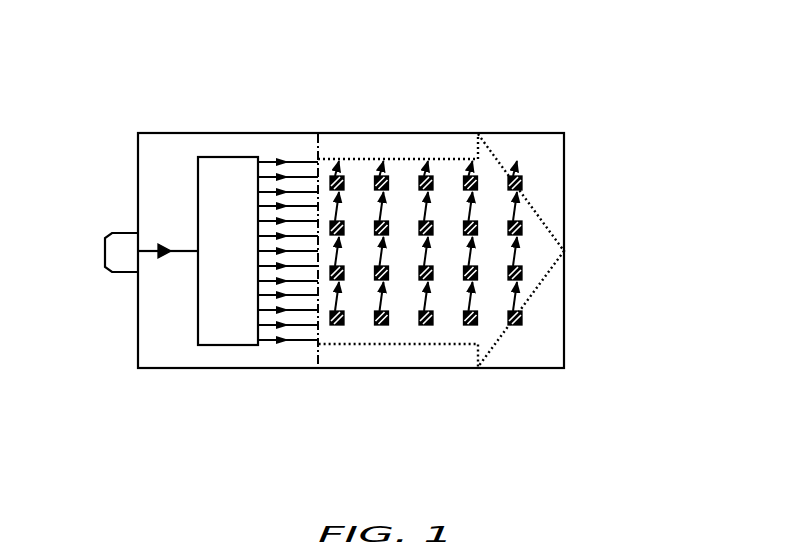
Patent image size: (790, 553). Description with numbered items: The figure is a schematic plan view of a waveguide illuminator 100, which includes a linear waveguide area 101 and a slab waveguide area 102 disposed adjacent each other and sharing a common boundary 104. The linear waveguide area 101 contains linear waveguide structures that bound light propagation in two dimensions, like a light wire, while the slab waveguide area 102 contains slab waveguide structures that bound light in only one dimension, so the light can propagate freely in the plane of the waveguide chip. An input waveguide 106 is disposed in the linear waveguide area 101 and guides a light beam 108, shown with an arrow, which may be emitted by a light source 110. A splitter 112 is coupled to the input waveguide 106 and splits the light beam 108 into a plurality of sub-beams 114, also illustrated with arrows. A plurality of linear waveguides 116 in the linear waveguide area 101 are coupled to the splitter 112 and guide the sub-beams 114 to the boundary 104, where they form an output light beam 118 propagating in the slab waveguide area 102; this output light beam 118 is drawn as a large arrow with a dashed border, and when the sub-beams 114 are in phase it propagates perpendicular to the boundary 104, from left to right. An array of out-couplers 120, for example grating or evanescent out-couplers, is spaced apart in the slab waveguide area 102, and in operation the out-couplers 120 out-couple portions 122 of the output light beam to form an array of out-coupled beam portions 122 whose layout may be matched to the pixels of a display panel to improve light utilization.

The waveguide illuminator 100 is at (604, 101).
The linear waveguide area 101 is at (153, 172).
The slab waveguide area 102 is at (545, 344).
The common boundary 104 is at (318, 355).
The input waveguide 106 is at (185, 252).
The light beam 108 is at (148, 252).
The light source 110 is at (113, 252).
The splitter 112 is at (249, 262).
The sub-beams 114 is at (266, 344).
The linear waveguides 116 is at (283, 252).
The output light beam 118 is at (363, 160).
The out-couplers 120 is at (382, 325).
The out-coupled beam portions 122 is at (517, 170).